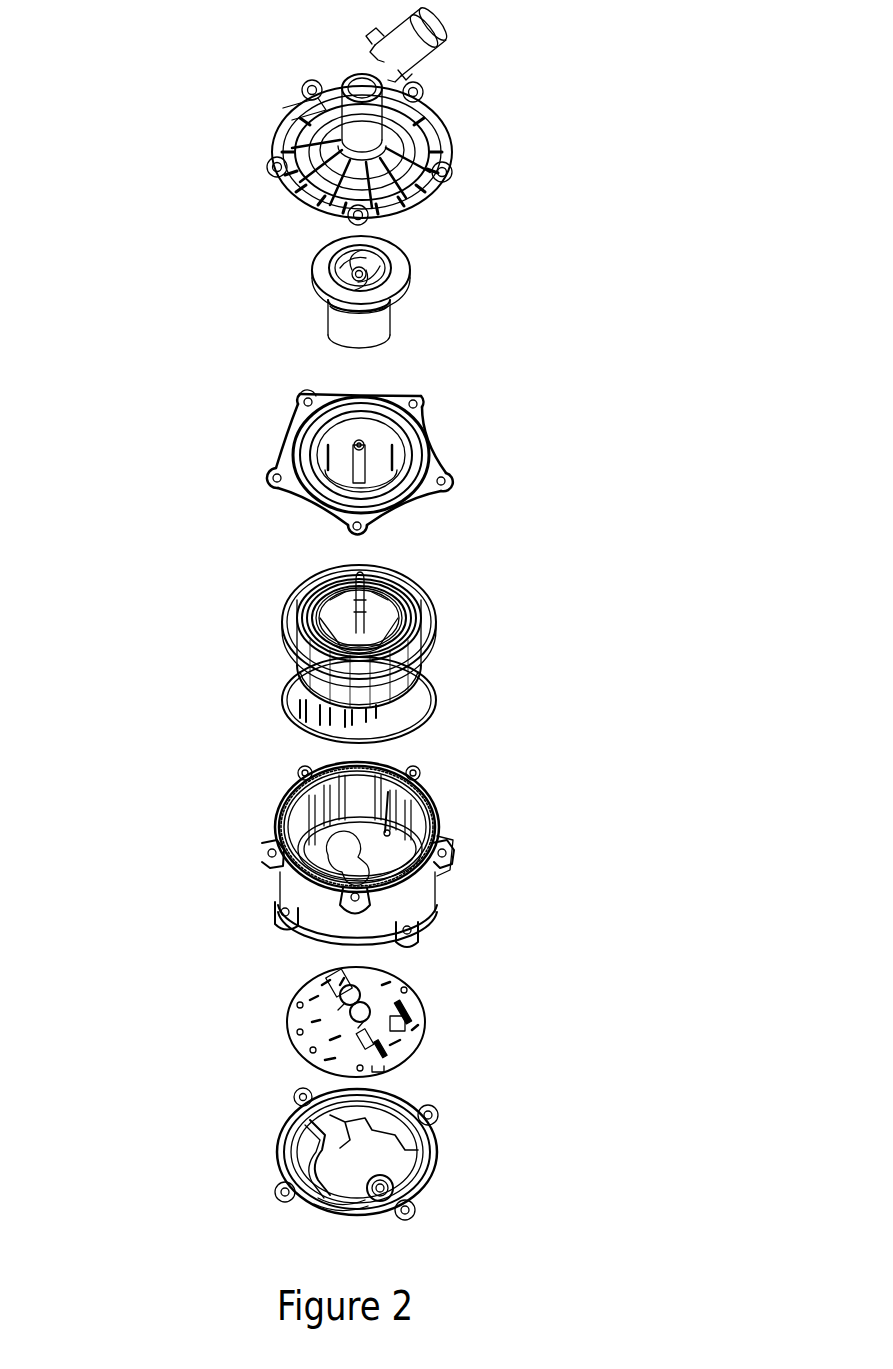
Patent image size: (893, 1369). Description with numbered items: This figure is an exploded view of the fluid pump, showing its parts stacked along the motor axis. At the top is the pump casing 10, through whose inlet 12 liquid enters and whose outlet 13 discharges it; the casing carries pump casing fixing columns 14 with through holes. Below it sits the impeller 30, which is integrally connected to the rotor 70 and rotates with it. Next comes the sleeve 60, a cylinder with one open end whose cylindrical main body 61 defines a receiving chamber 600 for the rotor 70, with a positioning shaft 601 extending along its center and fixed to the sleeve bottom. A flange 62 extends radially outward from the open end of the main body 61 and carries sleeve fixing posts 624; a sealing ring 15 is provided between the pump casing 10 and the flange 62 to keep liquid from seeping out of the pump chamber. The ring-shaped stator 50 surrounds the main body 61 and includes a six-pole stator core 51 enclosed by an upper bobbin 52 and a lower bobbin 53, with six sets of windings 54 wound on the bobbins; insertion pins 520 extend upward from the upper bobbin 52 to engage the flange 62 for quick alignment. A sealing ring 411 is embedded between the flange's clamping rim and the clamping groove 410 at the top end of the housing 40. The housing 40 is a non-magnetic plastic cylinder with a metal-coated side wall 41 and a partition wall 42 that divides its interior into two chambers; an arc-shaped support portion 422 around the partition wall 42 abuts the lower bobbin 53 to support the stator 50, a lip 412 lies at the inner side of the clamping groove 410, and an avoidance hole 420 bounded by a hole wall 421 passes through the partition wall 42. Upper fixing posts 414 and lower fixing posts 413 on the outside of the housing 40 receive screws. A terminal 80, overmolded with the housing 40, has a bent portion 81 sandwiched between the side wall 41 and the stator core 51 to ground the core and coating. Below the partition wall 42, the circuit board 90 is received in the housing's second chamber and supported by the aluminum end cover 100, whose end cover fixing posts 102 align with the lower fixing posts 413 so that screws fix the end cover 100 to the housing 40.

The pump casing 10 is at (447, 147).
The inlet 12 is at (360, 88).
The outlet 13 is at (452, 14).
The pump casing fixing column 14 is at (297, 93).
The impeller 30 is at (393, 255).
The rotor 70 is at (377, 332).
The sleeve 60 is at (303, 415).
The flange 62 is at (400, 507).
The sleeve fixing post 624 is at (298, 403).
The receiving chamber 600 is at (345, 460).
The positioning shaft 601 is at (360, 458).
The main body 61 is at (367, 433).
The stator 50 is at (296, 637).
The sealing ring 15 is at (287, 627).
The sealing ring 411 is at (283, 643).
The upper bobbin 52 is at (388, 588).
The lower bobbin 53 is at (412, 625).
The windings 54 is at (333, 593).
The insertion pin 520 is at (357, 580).
The stator core 51 is at (417, 683).
The housing 40 is at (295, 840).
The side wall 41 is at (358, 795).
The upper fixing post 414 is at (302, 773).
The support portion 422 is at (320, 812).
The partition wall 42 is at (323, 865).
The clamping groove 410 is at (370, 860).
The lip 412 is at (417, 832).
The avoidance hole 420 is at (438, 828).
The hole wall 421 is at (427, 870).
The lower fixing post 413 is at (280, 922).
The terminal 80 is at (420, 787).
The bent portion 81 is at (388, 820).
The circuit board 90 is at (425, 1005).
The end cover 100 is at (438, 1160).
The end cover fixing post 102 is at (273, 1198).